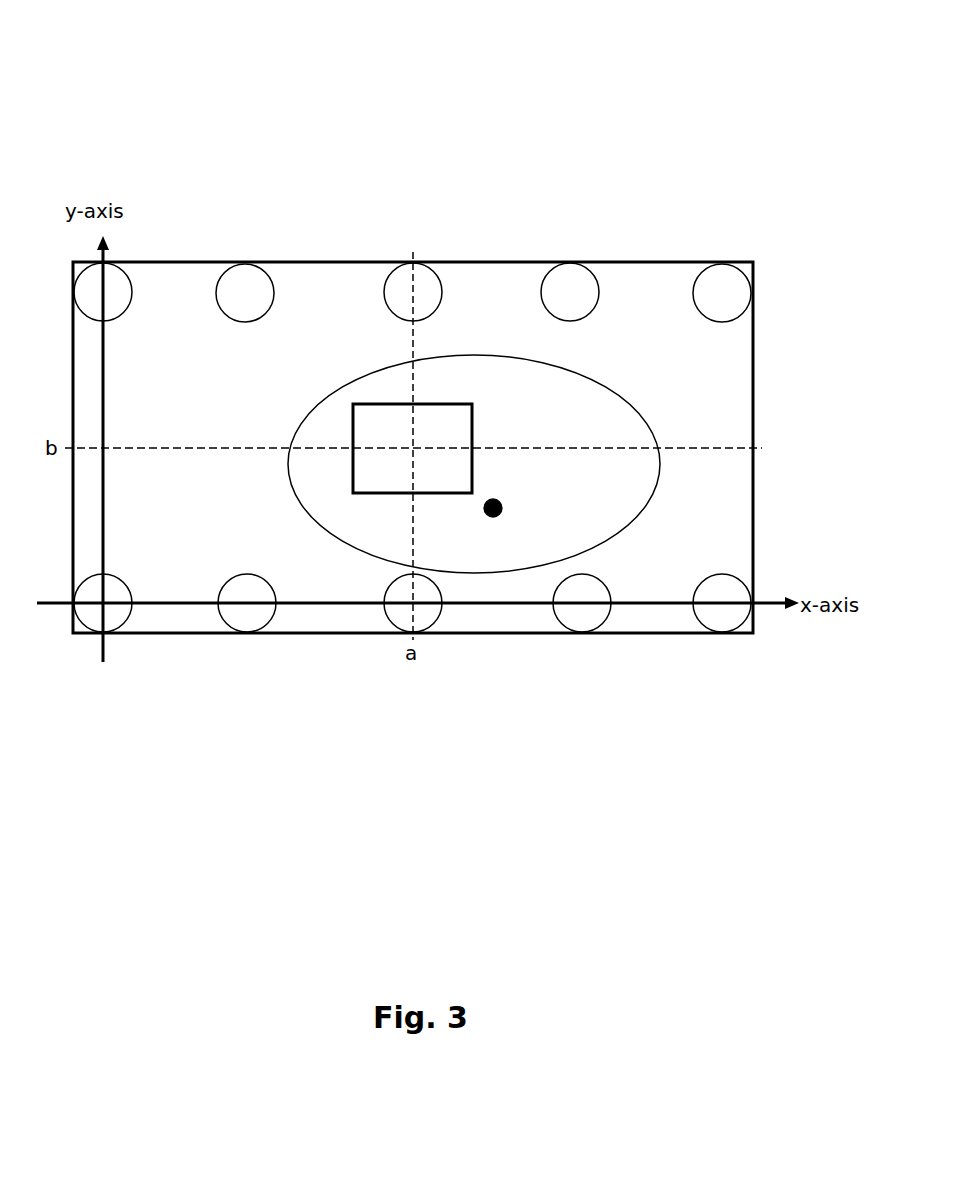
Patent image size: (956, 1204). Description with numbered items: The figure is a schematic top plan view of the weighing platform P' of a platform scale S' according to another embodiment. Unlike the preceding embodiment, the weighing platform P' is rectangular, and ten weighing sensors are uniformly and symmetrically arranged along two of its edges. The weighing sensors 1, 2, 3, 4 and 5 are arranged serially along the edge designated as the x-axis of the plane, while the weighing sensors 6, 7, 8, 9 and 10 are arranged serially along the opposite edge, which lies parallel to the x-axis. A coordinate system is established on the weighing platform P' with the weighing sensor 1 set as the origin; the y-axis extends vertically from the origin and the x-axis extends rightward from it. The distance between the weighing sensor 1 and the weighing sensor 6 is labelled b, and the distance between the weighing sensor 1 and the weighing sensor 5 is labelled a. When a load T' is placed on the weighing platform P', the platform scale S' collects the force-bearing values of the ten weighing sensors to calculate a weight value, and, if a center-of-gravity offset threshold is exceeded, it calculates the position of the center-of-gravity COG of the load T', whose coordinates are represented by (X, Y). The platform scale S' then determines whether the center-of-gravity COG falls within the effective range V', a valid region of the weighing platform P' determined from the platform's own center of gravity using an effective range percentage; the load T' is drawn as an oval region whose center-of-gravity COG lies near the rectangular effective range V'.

The weighing sensor 1 is at (122, 627).
The weighing sensor 2 is at (247, 633).
The weighing sensor 3 is at (430, 627).
The weighing sensor 4 is at (562, 632).
The weighing sensor 5 is at (700, 632).
The weighing sensor 6 is at (118, 265).
The weighing sensor 7 is at (223, 272).
The weighing sensor 8 is at (388, 273).
The weighing sensor 9 is at (543, 277).
The weighing sensor 10 is at (700, 270).
The platform scale S' is at (531, 75).
The weighing platform P' is at (413, 400).
The load T' is at (552, 464).
The effective range V' is at (389, 598).
The center-of-gravity COG is at (502, 503).